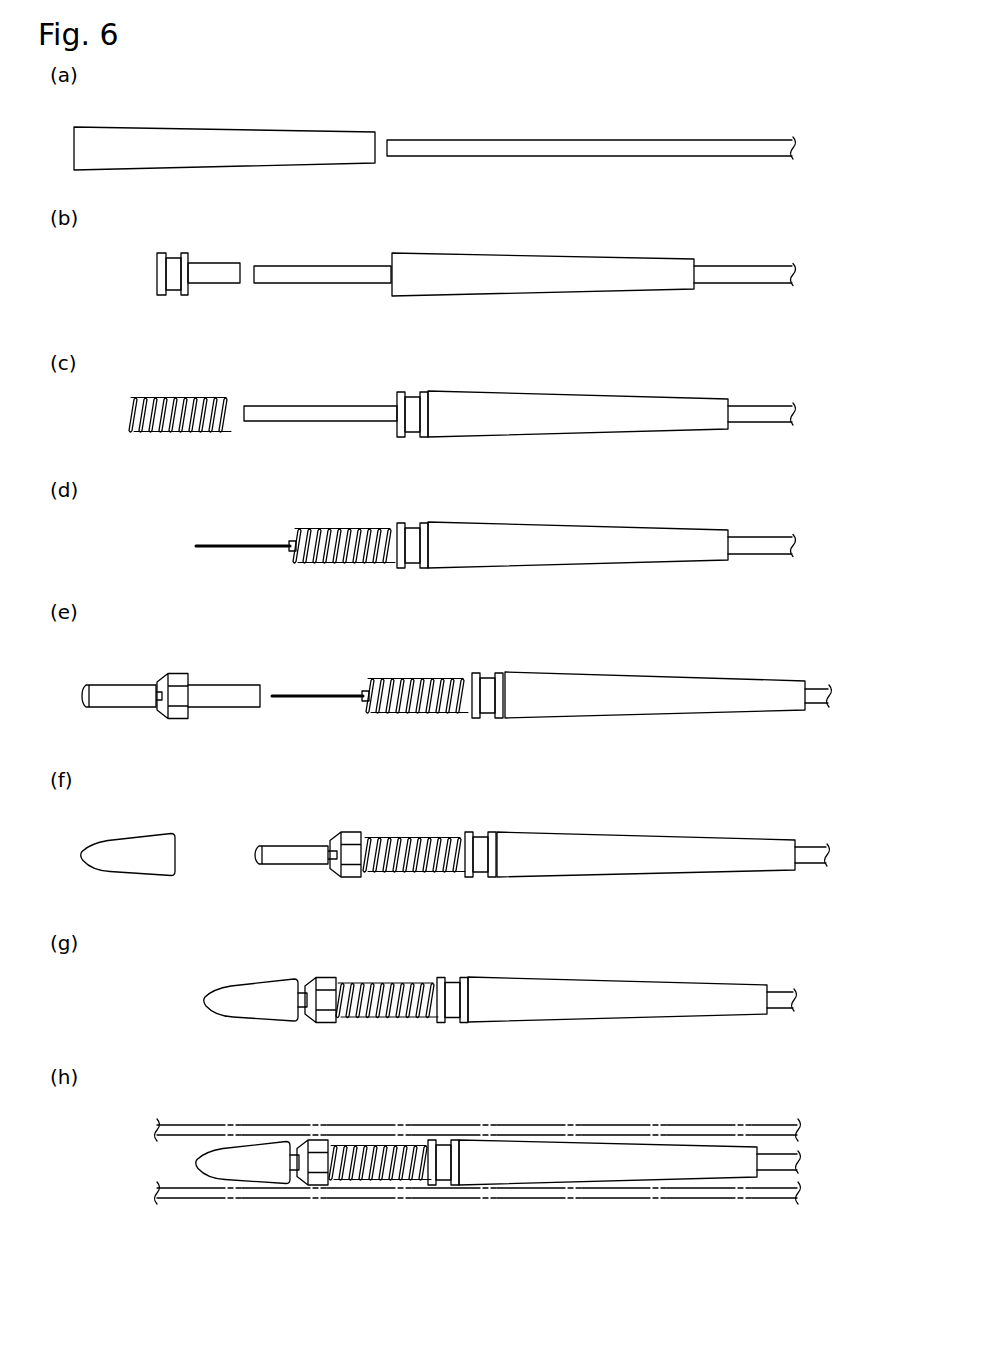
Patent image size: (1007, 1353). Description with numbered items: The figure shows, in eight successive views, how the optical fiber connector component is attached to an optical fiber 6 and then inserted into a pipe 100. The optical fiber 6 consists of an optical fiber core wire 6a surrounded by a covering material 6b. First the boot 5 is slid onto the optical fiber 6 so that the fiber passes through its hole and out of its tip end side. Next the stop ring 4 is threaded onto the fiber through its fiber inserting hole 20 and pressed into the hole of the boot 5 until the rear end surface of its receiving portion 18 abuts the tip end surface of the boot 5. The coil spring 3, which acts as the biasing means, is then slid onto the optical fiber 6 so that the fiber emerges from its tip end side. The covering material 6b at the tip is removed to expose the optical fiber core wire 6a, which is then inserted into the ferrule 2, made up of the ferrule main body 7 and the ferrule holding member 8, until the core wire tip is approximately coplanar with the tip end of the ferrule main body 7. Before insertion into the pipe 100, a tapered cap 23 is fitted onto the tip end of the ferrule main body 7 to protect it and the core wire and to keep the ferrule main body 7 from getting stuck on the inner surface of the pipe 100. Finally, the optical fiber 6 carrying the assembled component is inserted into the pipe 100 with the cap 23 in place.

The ferrule 2 is at (222, 899).
The coil spring 3 is at (163, 398).
The stop ring 4 is at (330, 693).
The boot 5 is at (192, 142).
The optical fiber 6 is at (514, 625).
The optical fiber core wire 6a is at (235, 546).
The covering material 6b is at (292, 541).
The ferrule main body 7 is at (282, 850).
The ferrule holding member 8 is at (351, 836).
The receiving portion 18 is at (187, 255).
The fiber inserting hole 20 is at (239, 264).
The cap 23 is at (156, 845).
The pipe 100 is at (630, 1124).